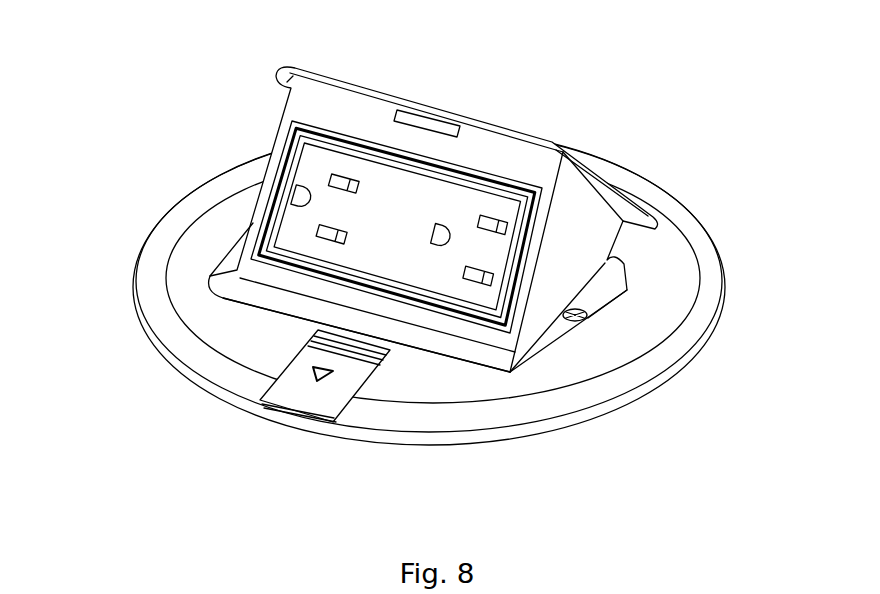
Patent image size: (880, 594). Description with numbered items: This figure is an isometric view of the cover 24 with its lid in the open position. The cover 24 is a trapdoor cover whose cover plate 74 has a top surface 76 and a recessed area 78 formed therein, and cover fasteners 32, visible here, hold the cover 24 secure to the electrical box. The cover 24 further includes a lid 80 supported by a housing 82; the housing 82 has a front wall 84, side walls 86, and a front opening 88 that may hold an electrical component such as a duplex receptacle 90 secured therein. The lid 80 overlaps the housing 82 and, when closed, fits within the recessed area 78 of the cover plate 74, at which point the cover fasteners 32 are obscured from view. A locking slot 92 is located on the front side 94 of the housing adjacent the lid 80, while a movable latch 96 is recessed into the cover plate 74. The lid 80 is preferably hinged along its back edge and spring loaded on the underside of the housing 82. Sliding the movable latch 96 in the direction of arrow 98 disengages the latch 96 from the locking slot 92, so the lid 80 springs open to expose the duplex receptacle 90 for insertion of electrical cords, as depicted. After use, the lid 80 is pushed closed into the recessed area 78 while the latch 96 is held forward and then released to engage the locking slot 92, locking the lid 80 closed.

The cover 24 is at (122, 127).
The cover fasteners 32 is at (586, 320).
The cover plate 74 is at (668, 273).
The top surface 76 is at (635, 318).
The recessed area 78 is at (538, 352).
The lid 80 is at (580, 158).
The housing 82 is at (595, 221).
The front wall 84 is at (486, 166).
The side walls 86 is at (559, 260).
The front opening 88 is at (326, 131).
The duplex receptacle 90 is at (375, 234).
The locking slot 92 is at (431, 121).
The front side 94 is at (445, 322).
The movable latch 96 is at (285, 370).
The arrow 98 is at (311, 373).